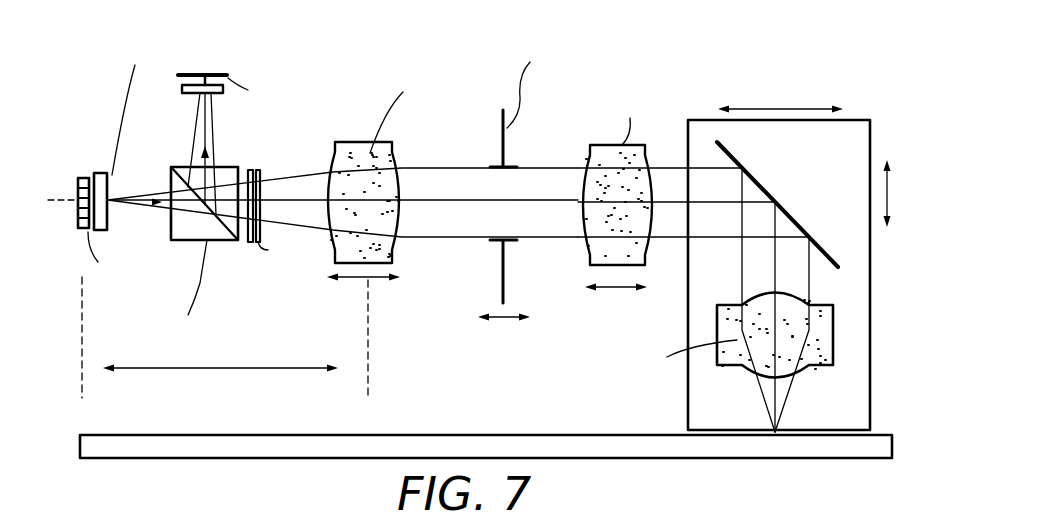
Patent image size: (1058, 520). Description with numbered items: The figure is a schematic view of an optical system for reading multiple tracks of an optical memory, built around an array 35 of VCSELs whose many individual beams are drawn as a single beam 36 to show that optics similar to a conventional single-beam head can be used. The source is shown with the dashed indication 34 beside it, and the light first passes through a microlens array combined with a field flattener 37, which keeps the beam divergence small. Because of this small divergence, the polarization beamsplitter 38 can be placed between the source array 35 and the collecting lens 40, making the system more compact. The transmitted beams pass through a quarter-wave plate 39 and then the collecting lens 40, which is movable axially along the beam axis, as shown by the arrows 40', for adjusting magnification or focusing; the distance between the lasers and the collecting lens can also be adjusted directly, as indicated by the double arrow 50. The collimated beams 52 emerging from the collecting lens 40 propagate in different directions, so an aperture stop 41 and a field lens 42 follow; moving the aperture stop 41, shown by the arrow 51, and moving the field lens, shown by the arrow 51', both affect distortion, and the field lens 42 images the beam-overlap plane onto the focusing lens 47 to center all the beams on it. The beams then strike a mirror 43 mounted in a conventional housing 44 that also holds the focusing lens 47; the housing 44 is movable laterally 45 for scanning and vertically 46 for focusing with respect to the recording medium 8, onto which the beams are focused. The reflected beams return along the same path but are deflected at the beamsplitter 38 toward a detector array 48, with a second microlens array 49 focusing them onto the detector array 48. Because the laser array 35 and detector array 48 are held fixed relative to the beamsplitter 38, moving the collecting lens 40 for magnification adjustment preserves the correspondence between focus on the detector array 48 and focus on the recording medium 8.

The recording medium 8 is at (354, 443).
The VCSEL array 34 is at (70, 200).
The array of VCSELs 35 is at (78, 177).
The single beam 36 is at (133, 198).
The microlens array combined with field flattener 37 is at (100, 172).
The polarization beamsplitter 38 is at (210, 242).
The quarter-wave plate 39 is at (258, 172).
The collecting lens 40 is at (410, 152).
The axial movement of collecting lens 40' is at (371, 303).
The aperture stop 41 is at (508, 165).
The field lens 42 is at (650, 165).
The mirror 43 is at (742, 168).
The housing 44 is at (871, 140).
The lateral movement 45 is at (797, 109).
The vertical movement 46 is at (888, 218).
The focusing lens 47 is at (808, 372).
The detector array 48 is at (179, 75).
The second microlens array 49 is at (223, 93).
The double arrow 50 is at (228, 369).
The arrow 51 is at (497, 338).
The arrow 51' is at (601, 311).
The collimated beams 52 is at (448, 182).